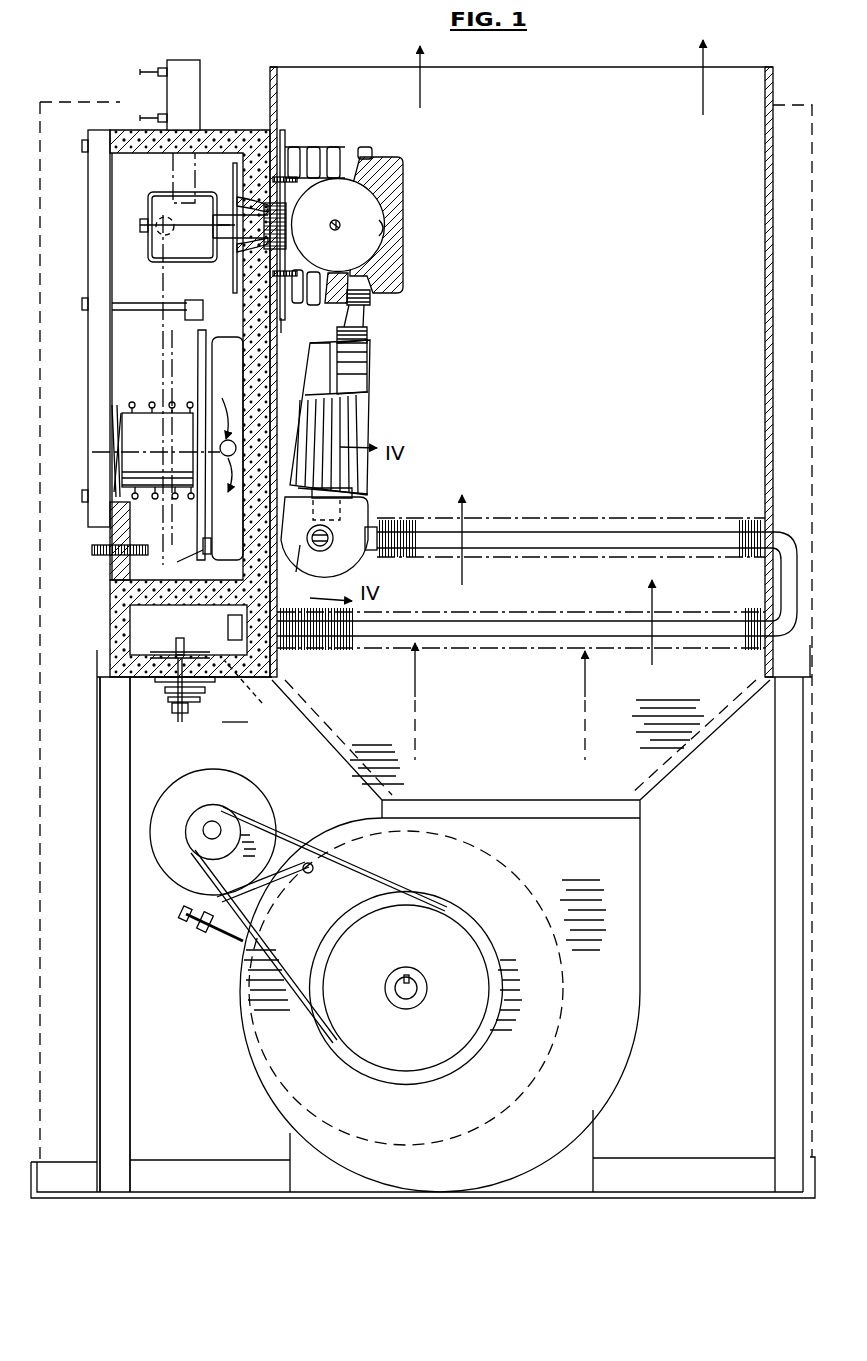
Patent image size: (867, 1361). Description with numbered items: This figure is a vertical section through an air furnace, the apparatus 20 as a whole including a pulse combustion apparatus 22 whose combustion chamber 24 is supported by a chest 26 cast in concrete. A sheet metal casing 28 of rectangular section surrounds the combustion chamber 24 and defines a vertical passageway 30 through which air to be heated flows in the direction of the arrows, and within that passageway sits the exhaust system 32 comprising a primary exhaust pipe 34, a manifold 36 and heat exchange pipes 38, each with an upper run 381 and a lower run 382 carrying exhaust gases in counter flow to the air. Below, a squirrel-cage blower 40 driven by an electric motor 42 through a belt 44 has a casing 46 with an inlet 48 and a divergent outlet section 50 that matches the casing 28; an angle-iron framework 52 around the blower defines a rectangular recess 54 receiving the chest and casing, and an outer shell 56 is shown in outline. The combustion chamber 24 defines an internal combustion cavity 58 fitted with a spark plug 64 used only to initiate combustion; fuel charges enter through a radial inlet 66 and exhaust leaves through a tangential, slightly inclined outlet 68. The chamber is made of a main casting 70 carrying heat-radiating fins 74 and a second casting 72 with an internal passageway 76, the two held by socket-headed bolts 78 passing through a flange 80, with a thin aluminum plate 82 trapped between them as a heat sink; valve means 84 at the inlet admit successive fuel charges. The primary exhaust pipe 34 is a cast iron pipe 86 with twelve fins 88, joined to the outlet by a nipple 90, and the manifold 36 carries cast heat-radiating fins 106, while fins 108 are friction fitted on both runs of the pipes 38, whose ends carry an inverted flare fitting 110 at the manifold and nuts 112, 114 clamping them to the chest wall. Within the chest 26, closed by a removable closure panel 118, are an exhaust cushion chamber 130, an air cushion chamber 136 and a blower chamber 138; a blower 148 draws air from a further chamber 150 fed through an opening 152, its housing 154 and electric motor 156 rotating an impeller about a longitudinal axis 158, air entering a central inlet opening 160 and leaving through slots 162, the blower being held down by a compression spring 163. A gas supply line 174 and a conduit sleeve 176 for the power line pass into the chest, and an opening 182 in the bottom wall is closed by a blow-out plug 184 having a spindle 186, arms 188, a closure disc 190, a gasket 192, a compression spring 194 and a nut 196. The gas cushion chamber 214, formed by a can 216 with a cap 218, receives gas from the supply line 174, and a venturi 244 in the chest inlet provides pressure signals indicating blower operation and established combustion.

The apparatus 20 is at (608, 57).
The pulse combustion apparatus 22 is at (322, 65).
The combustion chamber 24 is at (411, 189).
The chest 26 is at (243, 126).
The sheet metal casing 28 is at (765, 402).
The vertical passageway 30 is at (549, 293).
The exhaust system 32 is at (433, 427).
The primary exhaust pipe 34 is at (384, 405).
The manifold 36 is at (373, 505).
The heat exchange pipes 38 is at (580, 533).
The upper run 381 is at (658, 524).
The lower run 382 is at (679, 619).
The blower 40 is at (661, 867).
The electric motor 42 is at (268, 797).
The belt 44 is at (372, 866).
The casing 46 is at (624, 902).
The inlet 48 is at (530, 888).
The divergent outlet section 50 is at (688, 756).
The angle-iron framework 52 is at (95, 910).
The rectangular recess 54 is at (100, 668).
The outer casing or shell 56 is at (43, 614).
The internal combustion cavity 58 is at (383, 230).
The spark plug 64 is at (337, 230).
The inlet 66 is at (297, 216).
The exhaust gas outlet 68 is at (360, 282).
The main casting 70 is at (373, 157).
The casting 72 is at (282, 130).
The heat-radiating fins 74 is at (352, 147).
The internal passageway 76 is at (214, 250).
The socket-headed bolts 78 is at (296, 148).
The flange 80 is at (289, 336).
The thin aluminum plate 82 is at (287, 259).
The means for admitting fuel charges 84 is at (231, 203).
The cast iron pipe 86 is at (368, 375).
The fins 88 is at (366, 354).
The nipple 90 is at (365, 305).
The heat-radiating fins 106 is at (340, 555).
The heat radiating fins 108 is at (752, 524).
The inverted flare fitting 110 is at (400, 527).
The nut 112 is at (226, 620).
The nut 114 is at (317, 642).
The closure panel 118 is at (90, 197).
The exhaust cushion chamber 130 is at (188, 630).
The air cushion chamber 136 is at (156, 178).
The blower chamber 138 is at (156, 390).
The blower 148 is at (122, 428).
The further chamber 150 is at (243, 370).
The opening 152 is at (206, 520).
The housing 154 is at (194, 562).
The electric motor 156 is at (160, 441).
The longitudinal axis 158 is at (113, 470).
The central inlet opening 160 is at (220, 430).
The slots 162 is at (215, 536).
The compression spring 163 is at (138, 500).
The gas supply line 174 is at (165, 272).
The conduit sleeve 176 is at (107, 548).
The opening 182 is at (253, 692).
The blow-out plug 184 is at (235, 726).
The spindle 186 is at (177, 718).
The arms 188 is at (186, 647).
The closure disc 190 is at (205, 683).
The gasket 192 is at (170, 694).
The compression spring 194 is at (200, 700).
The nut 196 is at (188, 715).
The gas cushion chamber 214 is at (135, 219).
The can 216 is at (185, 236).
The cap 218 is at (147, 233).
The venturi 244 is at (192, 86).